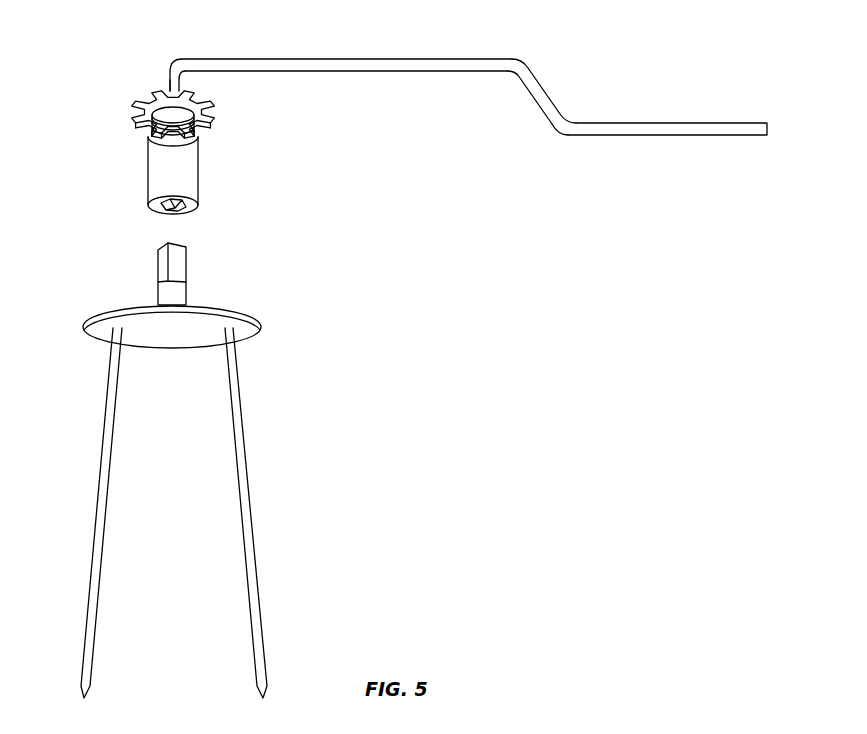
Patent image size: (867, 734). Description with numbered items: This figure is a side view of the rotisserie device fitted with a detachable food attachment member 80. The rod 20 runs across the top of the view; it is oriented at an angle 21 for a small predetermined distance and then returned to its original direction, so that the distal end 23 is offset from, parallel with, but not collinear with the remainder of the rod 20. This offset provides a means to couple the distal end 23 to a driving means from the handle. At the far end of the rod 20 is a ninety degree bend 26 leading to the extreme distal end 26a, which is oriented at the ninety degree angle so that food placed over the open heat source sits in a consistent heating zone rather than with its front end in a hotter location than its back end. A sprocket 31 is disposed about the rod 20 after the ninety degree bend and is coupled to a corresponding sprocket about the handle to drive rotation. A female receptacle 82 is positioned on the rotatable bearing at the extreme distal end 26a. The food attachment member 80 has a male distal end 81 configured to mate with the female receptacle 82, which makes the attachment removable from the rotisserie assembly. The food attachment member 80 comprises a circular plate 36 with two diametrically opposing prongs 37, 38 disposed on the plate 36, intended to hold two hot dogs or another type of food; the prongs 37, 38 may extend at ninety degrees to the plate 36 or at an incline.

The rod 20 is at (737, 135).
The angle 21 is at (566, 135).
The distal end 23 is at (365, 59).
The ninety degree bend 26 is at (182, 62).
The extreme distal end 26a is at (168, 72).
The sprocket 31 is at (131, 109).
The circular plate 36 is at (262, 327).
The prong 37 is at (257, 617).
The prong 38 is at (90, 603).
The food attachment member 80 is at (288, 518).
The male distal end 81 is at (180, 266).
The female receptacle 82 is at (186, 178).